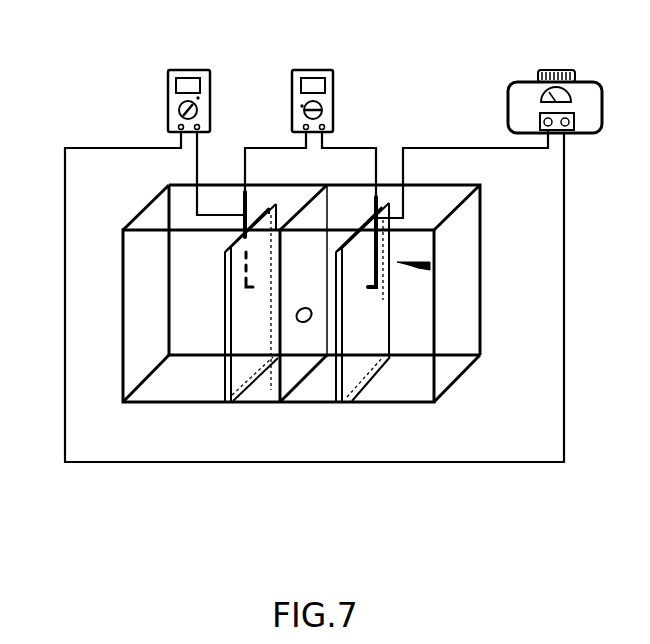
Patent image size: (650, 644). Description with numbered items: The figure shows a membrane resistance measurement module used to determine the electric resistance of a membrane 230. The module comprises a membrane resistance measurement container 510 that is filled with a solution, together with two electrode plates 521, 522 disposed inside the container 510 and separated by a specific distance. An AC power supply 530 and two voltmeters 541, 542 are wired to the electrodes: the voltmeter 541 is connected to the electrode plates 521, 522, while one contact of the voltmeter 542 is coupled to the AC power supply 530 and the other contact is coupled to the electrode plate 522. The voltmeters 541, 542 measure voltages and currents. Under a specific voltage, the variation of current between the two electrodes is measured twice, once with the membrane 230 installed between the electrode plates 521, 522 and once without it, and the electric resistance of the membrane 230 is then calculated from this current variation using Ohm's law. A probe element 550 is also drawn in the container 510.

The membrane resistance measurement container 510 is at (460, 315).
The electrode plate 521 is at (354, 362).
The electrode plate 522 is at (223, 378).
The AC power supply 530 is at (567, 70).
The voltmeter 541 is at (323, 70).
The voltmeter 542 is at (196, 70).
The electrode probe 550 is at (300, 205).
The membrane 230 is at (302, 323).